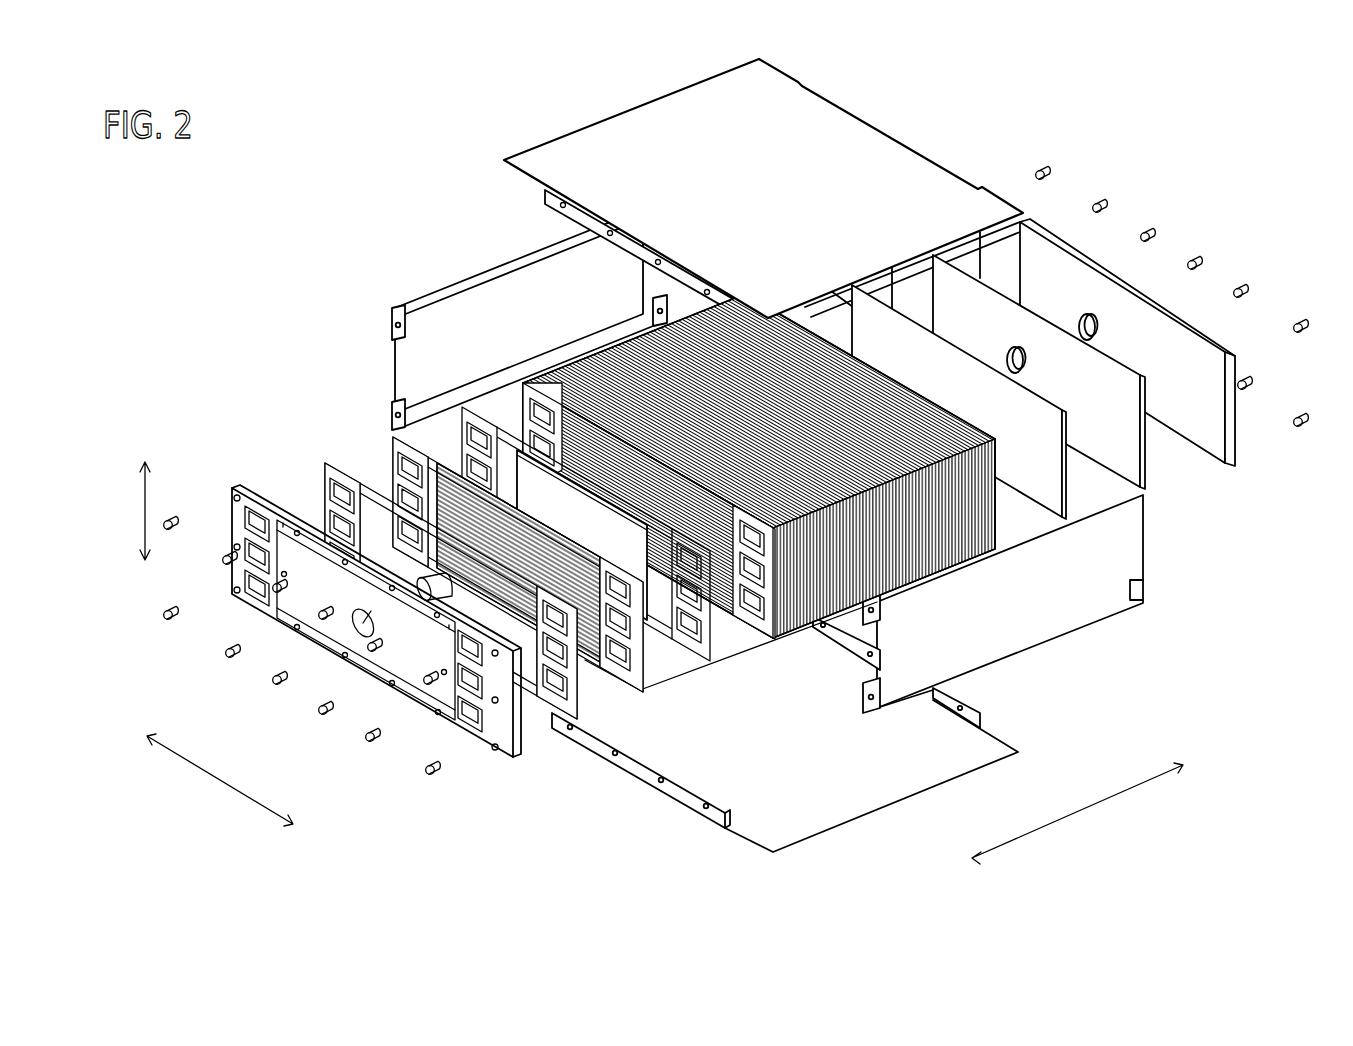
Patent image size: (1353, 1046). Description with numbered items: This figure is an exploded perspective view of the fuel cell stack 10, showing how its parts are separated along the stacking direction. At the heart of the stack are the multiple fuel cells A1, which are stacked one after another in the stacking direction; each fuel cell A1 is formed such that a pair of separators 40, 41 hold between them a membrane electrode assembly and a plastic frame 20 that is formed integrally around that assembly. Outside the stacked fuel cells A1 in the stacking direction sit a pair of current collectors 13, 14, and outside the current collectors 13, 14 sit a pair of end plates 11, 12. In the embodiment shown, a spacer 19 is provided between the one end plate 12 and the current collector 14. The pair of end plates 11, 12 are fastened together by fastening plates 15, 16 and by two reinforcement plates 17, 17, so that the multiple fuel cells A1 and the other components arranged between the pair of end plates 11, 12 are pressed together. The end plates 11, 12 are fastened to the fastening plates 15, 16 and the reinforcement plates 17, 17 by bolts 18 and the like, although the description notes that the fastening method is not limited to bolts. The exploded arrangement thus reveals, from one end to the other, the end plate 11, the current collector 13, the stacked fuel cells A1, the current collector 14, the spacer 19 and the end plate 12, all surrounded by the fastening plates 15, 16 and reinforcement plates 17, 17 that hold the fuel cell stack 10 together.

The fuel cell stack 10 is at (391, 214).
The end plate 11 is at (240, 480).
The end plate 12 is at (1148, 290).
The current collector 13 is at (323, 473).
The current collector 14 is at (1067, 487).
The fastening plate 15 is at (612, 112).
The fastening plate 16 is at (923, 795).
The reinforcement plate 17 is at (458, 280).
The bolt 18 is at (1100, 200).
The spacer 19 is at (1148, 467).
The frame 20 is at (460, 445).
The separator 40 is at (389, 462).
The separator 41 is at (527, 406).
The fuel cell A1 is at (700, 668).